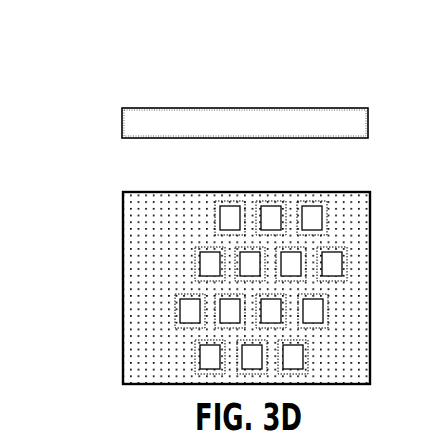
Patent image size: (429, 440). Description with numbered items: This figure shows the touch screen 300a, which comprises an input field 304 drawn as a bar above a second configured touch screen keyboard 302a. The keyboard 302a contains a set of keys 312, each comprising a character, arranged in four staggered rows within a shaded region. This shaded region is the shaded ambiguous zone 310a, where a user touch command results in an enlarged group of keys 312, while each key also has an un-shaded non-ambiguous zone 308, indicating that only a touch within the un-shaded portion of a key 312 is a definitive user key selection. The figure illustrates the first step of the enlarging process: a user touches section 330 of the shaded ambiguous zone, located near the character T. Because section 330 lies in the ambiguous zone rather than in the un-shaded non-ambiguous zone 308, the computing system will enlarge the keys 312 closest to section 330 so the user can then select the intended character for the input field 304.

The touch screen 300a is at (312, 101).
The second configured touch screen keyboard 302a is at (118, 221).
The input field 304 is at (126, 122).
The un-shaded non-ambiguous zone 308 is at (232, 205).
The shaded ambiguous zone 310a is at (135, 258).
The keys 312 is at (216, 211).
The section 330 is at (238, 272).